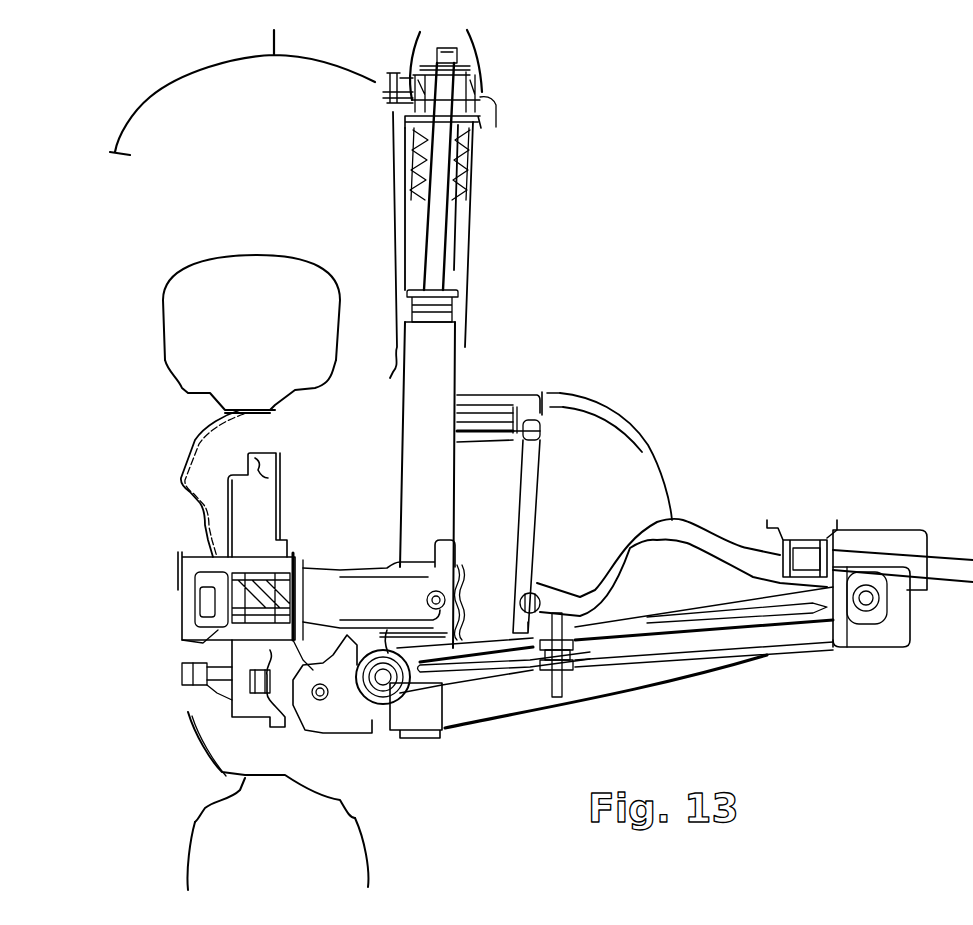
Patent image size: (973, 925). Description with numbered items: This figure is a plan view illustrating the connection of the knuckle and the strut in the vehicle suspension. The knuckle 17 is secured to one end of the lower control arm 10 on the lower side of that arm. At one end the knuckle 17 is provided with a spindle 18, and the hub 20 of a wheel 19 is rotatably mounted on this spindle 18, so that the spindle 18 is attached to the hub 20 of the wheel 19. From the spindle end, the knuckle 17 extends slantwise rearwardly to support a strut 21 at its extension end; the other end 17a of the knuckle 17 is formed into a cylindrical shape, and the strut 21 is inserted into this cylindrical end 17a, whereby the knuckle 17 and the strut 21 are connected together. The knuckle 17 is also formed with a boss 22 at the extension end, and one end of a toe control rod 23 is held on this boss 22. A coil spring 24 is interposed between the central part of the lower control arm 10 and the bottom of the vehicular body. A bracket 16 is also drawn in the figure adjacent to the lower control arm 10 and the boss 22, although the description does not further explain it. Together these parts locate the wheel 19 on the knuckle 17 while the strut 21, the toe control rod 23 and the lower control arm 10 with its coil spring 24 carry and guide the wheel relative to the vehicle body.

The lower control arm 10 is at (655, 688).
The bracket 16 is at (343, 705).
The knuckle 17 is at (370, 578).
The other end of the knuckle 17a is at (455, 568).
The spindle 18 is at (185, 582).
The wheel 19 is at (195, 440).
The hub 20 is at (187, 711).
The strut 21 is at (413, 416).
The boss 22 is at (357, 700).
The toe control rod 23 is at (493, 670).
The coil spring 24 is at (530, 520).